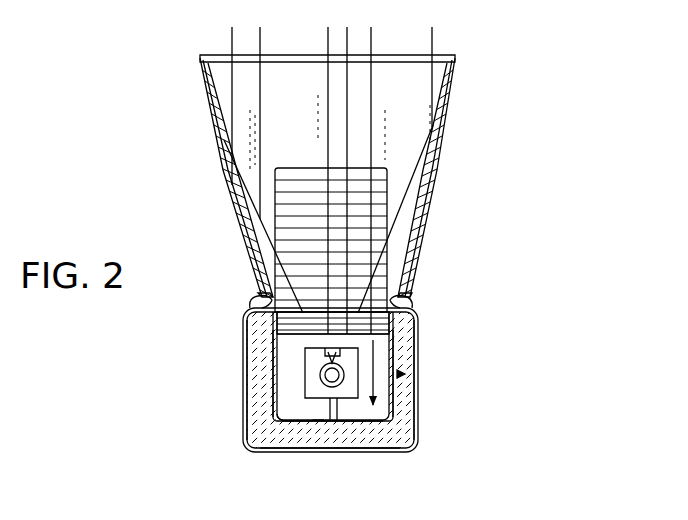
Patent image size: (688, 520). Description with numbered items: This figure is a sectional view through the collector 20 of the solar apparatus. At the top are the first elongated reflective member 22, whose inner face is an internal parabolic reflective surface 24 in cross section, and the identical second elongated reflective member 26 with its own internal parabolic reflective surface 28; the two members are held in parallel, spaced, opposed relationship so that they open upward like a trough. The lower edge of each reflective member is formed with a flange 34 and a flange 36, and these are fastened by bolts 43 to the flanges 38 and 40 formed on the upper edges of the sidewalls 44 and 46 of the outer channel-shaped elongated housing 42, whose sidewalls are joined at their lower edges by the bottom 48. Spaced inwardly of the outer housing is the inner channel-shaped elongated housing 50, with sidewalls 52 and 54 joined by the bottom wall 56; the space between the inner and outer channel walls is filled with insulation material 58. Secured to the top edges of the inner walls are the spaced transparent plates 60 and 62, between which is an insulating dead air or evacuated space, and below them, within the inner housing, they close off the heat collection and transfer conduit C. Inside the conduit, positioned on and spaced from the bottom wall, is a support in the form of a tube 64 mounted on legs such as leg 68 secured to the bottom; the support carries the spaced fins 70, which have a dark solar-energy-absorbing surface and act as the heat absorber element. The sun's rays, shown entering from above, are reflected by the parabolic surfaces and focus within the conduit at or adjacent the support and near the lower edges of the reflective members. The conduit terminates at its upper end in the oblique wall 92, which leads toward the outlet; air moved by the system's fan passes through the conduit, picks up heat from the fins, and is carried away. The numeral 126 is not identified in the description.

The collector 20 is at (470, 130).
The first elongated reflective member 22 is at (238, 208).
The internal parabolic reflective surface 24 is at (208, 90).
The second elongated reflective member 26 is at (438, 153).
The internal parabolic reflective surface 28 is at (420, 216).
The flange 34 is at (250, 300).
The flange 36 is at (405, 298).
The flange 38 is at (262, 328).
The flange 40 is at (420, 336).
The outer channel-shaped elongated housing 42 is at (233, 429).
The bolts 43 is at (258, 293).
The sidewall 44 is at (262, 385).
The sidewall 46 is at (420, 364).
The bottom 48 is at (396, 448).
The inner channel-shaped elongated housing 50 is at (420, 380).
The sidewall 52 is at (262, 392).
The sidewall 54 is at (413, 400).
The bottom wall 56 is at (341, 434).
The insulation material 58 is at (307, 436).
The transparent plate 60 is at (330, 348).
The transparent plate 62 is at (308, 362).
The support 64 is at (320, 380).
The leg 68 is at (318, 432).
The fins 70 is at (283, 433).
The oblique wall 92 is at (310, 168).
The liquid streams 126 is at (402, 54).
The heat collection and transfer conduit C is at (373, 448).